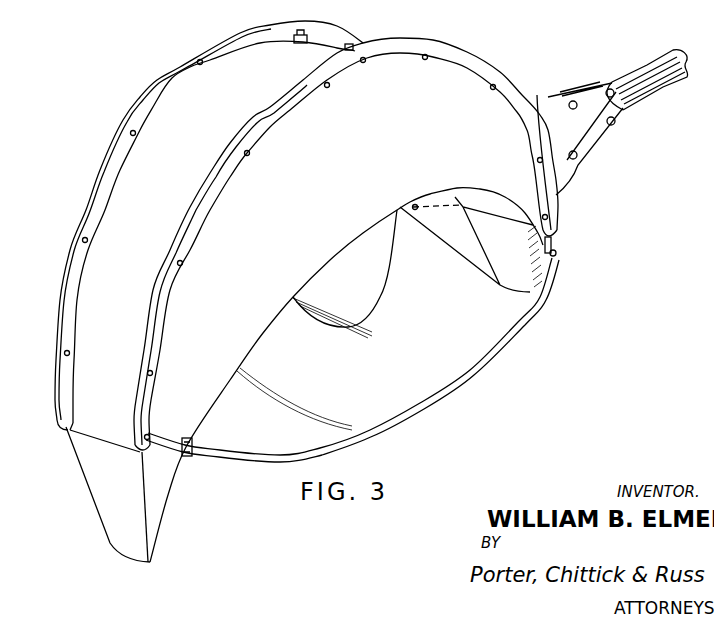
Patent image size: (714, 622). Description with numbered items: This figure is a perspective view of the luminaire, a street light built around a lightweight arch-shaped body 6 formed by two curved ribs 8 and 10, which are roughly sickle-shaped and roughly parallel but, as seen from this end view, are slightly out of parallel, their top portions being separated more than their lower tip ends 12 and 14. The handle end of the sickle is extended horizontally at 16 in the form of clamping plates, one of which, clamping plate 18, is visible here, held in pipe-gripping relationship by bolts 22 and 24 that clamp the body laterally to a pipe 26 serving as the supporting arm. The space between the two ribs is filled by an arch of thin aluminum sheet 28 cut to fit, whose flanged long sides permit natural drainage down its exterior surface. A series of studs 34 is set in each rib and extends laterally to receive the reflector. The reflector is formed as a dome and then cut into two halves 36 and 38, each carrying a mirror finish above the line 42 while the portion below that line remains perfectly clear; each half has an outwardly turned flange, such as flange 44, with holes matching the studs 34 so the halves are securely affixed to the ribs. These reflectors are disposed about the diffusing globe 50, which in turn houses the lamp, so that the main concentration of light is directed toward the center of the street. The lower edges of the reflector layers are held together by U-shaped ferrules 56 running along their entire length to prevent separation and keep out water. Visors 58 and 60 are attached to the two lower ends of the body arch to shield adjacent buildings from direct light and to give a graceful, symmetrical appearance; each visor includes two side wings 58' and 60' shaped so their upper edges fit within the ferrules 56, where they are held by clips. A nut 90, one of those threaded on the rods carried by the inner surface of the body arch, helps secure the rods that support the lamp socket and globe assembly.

The arch-shaped body 6 is at (90, 153).
The curved rib 8 is at (165, 87).
The curved rib 10 is at (457, 48).
The lower tip end 12 is at (55, 407).
The lower tip end 14 is at (150, 428).
The horizontally extended handle end 16 is at (567, 93).
The clamping plate 18 is at (585, 137).
The bolt 22 is at (576, 163).
The bolt 24 is at (616, 122).
The pipe 26 is at (668, 51).
The arch sheet 28 is at (218, 126).
The studs 34 is at (250, 154).
The reflector half 36 is at (484, 350).
The reflector half 38 is at (455, 197).
The line 42 is at (264, 337).
The outwardly turned flange 44 is at (298, 108).
The globe 50 is at (360, 307).
The U-shaped ferrule 56 is at (530, 324).
The visor 58 is at (128, 564).
The side wing 58' is at (191, 487).
The visor 60 is at (560, 262).
The side wing 60' is at (466, 246).
The nut 90 is at (363, 43).